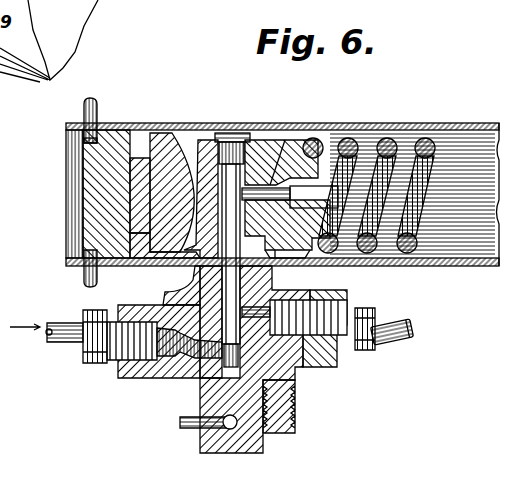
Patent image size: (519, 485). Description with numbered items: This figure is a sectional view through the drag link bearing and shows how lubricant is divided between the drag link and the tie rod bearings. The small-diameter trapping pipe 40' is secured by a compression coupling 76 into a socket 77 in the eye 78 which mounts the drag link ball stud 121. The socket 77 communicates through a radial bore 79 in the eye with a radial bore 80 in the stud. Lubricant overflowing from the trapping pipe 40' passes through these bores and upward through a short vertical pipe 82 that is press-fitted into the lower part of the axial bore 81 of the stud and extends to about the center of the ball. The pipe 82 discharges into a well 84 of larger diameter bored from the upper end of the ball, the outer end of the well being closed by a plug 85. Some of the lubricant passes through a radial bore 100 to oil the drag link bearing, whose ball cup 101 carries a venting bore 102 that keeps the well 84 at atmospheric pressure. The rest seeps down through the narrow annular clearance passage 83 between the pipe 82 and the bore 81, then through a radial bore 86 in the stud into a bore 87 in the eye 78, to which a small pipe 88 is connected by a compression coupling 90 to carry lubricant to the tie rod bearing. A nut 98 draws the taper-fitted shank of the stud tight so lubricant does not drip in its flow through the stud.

The pipe 40' is at (46, 352).
The compression coupling 76 is at (92, 362).
The socket 77 is at (150, 377).
The eye 78 is at (322, 368).
The radial bore 79 is at (212, 357).
The radial bore 80 is at (183, 418).
The axial bore 81 is at (196, 271).
The vertical pipe 82 is at (213, 322).
The clearance passage 83 is at (160, 272).
The well 84 is at (203, 158).
The plug 85 is at (234, 155).
The radial bore 86 is at (297, 384).
The bore 87 is at (300, 315).
The pipe 88 is at (400, 333).
The compression coupling 90 is at (345, 347).
The nut 98 is at (280, 437).
The radial bore 100 is at (262, 158).
The ball cup 101 is at (307, 158).
The venting bore 102 is at (339, 158).
The drag link ball stud 121 is at (262, 272).